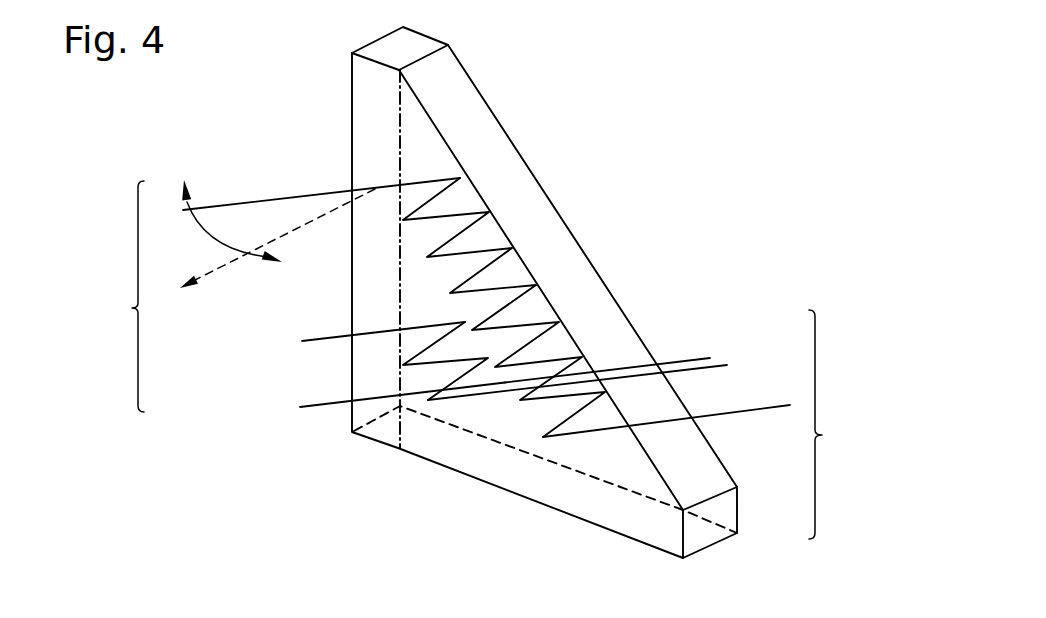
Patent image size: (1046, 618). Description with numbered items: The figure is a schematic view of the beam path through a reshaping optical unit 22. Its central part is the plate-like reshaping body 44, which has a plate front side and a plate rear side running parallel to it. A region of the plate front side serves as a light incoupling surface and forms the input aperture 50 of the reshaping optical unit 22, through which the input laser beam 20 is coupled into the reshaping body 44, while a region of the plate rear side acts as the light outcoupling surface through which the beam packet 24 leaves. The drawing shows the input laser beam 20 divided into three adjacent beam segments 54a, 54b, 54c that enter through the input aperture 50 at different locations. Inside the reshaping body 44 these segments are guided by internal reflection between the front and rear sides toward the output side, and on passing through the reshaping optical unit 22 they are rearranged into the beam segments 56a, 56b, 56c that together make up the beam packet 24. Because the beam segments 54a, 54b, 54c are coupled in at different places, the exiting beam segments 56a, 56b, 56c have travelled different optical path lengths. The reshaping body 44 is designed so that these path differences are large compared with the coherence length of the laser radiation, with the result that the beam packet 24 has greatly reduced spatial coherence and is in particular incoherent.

The input laser beam 20 is at (118, 296).
The reshaping optical unit 22 is at (524, 60).
The beam packet 24 is at (838, 424).
The reshaping body 44 is at (525, 128).
The input aperture 50 is at (364, 88).
The beam segment 54a is at (240, 203).
The beam segment 54b is at (317, 340).
The beam segment 54c is at (313, 410).
The beam segment 56a is at (768, 411).
The beam segment 56b is at (720, 362).
The beam segment 56c is at (690, 355).